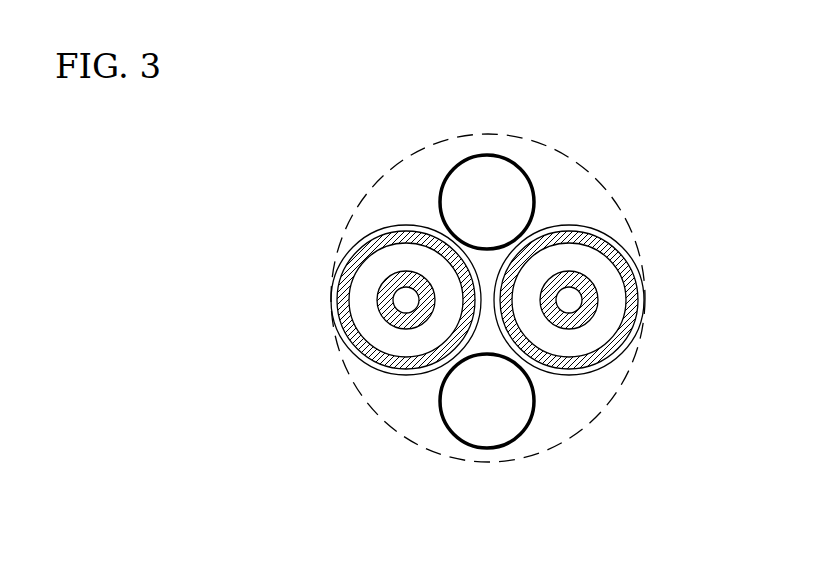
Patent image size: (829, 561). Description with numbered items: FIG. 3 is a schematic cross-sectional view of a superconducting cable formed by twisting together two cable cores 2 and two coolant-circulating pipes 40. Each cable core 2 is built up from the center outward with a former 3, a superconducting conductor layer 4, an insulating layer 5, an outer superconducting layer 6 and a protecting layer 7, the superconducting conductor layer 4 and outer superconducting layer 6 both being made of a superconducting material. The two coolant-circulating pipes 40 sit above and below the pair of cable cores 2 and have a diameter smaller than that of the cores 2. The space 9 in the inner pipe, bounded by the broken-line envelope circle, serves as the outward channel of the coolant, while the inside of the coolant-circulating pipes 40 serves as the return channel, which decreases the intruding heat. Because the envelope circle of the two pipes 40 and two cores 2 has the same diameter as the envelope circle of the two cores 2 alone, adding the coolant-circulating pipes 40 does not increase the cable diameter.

The cable core 2 is at (478, 298).
The former 3 is at (398, 292).
The superconducting conductor layer 4 is at (379, 290).
The insulating layer 5 is at (368, 323).
The outer superconducting layer 6 is at (376, 300).
The protecting layer 7 is at (406, 265).
The space 9 is at (609, 188).
The coolant-circulating pipe 40 is at (482, 311).